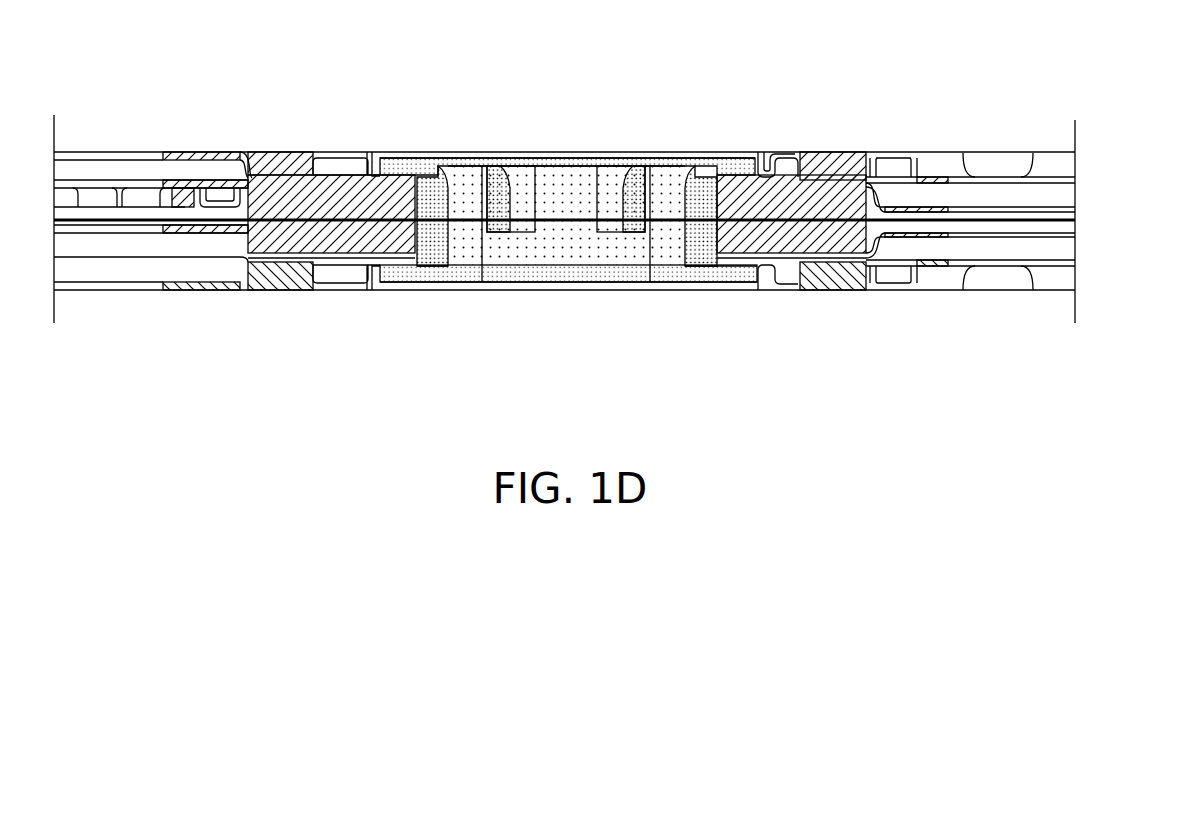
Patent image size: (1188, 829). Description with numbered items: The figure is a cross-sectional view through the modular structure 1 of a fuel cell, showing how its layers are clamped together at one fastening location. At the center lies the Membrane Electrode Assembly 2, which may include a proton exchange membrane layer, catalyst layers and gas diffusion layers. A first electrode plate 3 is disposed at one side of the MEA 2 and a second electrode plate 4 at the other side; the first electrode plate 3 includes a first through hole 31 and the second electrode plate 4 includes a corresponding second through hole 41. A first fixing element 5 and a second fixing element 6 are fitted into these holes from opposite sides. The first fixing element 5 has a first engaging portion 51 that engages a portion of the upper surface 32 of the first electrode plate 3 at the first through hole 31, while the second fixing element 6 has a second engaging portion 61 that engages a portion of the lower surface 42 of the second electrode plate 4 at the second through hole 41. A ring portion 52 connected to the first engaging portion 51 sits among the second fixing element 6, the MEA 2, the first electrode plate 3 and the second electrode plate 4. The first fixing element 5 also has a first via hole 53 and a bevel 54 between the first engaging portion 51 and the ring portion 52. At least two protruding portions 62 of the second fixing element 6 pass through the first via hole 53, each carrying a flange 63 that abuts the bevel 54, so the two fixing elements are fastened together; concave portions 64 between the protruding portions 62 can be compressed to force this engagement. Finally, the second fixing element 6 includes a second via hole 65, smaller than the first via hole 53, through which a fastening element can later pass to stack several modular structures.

The modular structure 1 is at (336, 78).
The Membrane Electrode Assembly (MEA) 2 is at (1073, 222).
The first electrode plate 3 is at (1068, 168).
The second electrode plate 4 is at (1068, 252).
The first fixing element 5 is at (567, 150).
The second fixing element 6 is at (528, 285).
The first through hole 31 is at (423, 188).
The surface of the first electrode plate 32 is at (758, 172).
The second through hole 41 is at (428, 240).
The surface of the second electrode plate 42 is at (732, 275).
The first engaging portion 51 is at (728, 168).
The ring portion 52 is at (700, 265).
The first via hole 53 is at (441, 203).
The bevel 54 is at (700, 172).
The second engaging portion 61 is at (712, 280).
The protruding portions 62 is at (606, 178).
The flange 63 is at (656, 165).
The concave portions 64 is at (493, 178).
The second via hole 65 is at (568, 238).